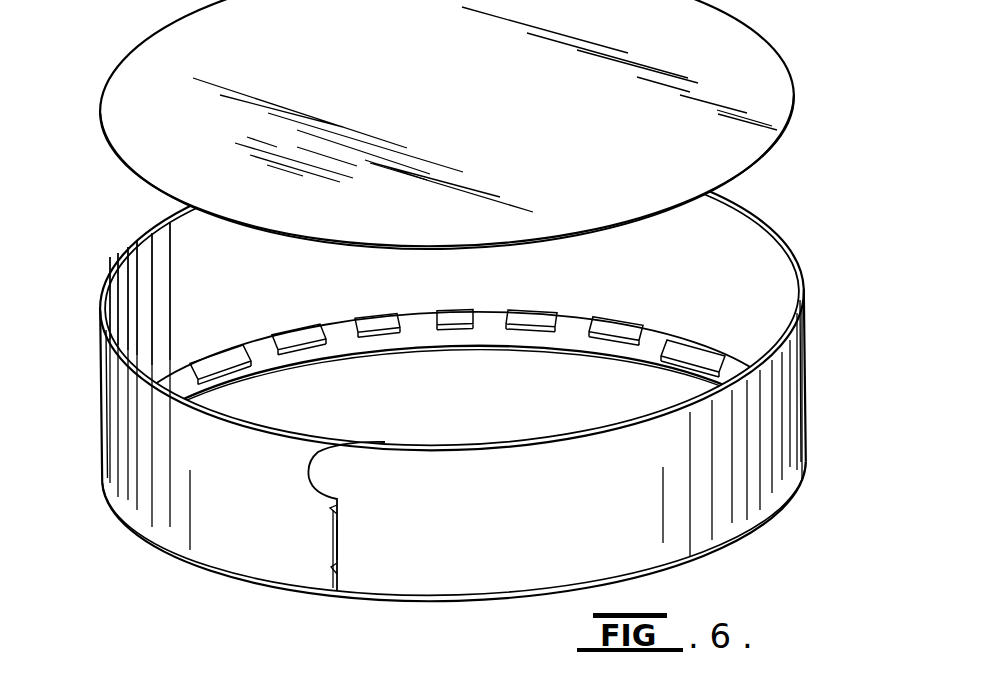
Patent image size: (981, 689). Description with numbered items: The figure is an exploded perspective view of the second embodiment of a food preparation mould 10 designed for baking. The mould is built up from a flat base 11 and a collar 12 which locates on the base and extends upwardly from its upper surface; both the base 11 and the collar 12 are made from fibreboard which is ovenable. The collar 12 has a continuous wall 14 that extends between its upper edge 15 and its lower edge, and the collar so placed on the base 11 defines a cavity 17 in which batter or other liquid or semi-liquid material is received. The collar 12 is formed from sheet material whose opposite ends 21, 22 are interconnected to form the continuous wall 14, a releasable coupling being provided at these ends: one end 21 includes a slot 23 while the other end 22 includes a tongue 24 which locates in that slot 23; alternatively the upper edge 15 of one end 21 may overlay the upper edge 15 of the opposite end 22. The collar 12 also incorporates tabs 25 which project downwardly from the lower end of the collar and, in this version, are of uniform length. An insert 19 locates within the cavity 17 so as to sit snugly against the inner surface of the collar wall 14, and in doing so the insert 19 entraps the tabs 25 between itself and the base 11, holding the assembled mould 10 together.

The container 10 is at (452, 407).
The flat base 11 is at (330, 347).
The collar 12 is at (148, 418).
The continuous wall 14 is at (630, 527).
The upper edge 15 is at (157, 233).
The cavity 17 is at (165, 318).
The insert 19 is at (435, 82).
The end of collar sheet 21 is at (384, 435).
The other end of collar sheet 22 is at (338, 575).
The slot 23 is at (338, 510).
The tongue 24 is at (338, 540).
The tabs 25 is at (357, 317).